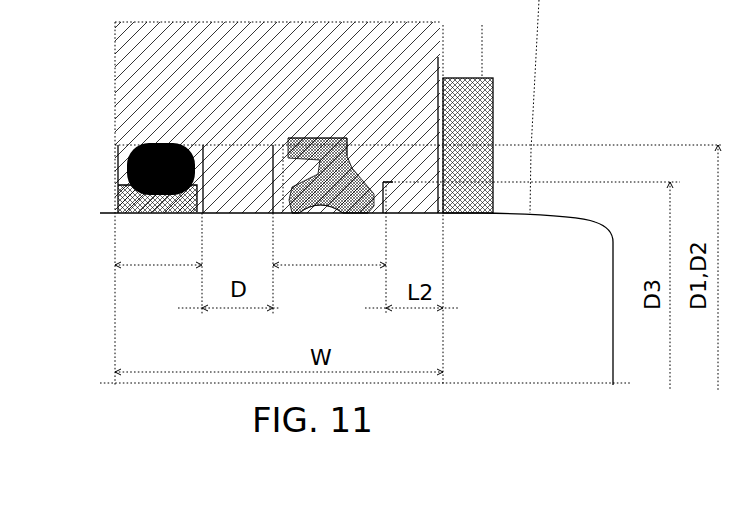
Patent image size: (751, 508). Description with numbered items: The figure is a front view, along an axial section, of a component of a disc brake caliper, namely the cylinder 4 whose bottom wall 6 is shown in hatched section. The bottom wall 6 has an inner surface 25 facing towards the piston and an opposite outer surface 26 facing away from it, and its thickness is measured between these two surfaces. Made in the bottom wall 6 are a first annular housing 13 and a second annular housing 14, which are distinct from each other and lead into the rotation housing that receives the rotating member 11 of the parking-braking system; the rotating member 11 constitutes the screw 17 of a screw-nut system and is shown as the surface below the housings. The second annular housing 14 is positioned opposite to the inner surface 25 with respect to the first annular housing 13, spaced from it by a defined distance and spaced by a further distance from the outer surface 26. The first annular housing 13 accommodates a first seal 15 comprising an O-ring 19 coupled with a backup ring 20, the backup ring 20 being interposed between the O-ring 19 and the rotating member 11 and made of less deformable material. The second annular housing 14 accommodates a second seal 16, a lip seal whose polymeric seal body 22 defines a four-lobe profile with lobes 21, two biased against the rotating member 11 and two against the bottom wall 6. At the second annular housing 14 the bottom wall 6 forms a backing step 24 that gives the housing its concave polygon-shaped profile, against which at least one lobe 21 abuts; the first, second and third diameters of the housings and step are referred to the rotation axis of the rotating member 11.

The cylinder 4 is at (298, 106).
The bottom wall 6 is at (204, 92).
The inner surface 25 is at (114, 84).
The first annular housing 13 is at (118, 151).
The first seal 15 is at (133, 175).
The O-ring 19 is at (129, 191).
The backup ring 20 is at (150, 188).
The second seal 16 is at (354, 178).
The backing step 24 is at (367, 179).
The second annular housing 14 is at (384, 198).
The seal body 22 is at (343, 150).
The lobes 21 is at (320, 143).
The outer surface 26 is at (445, 158).
The rotating member 11 is at (366, 315).
The screw 17 is at (366, 315).